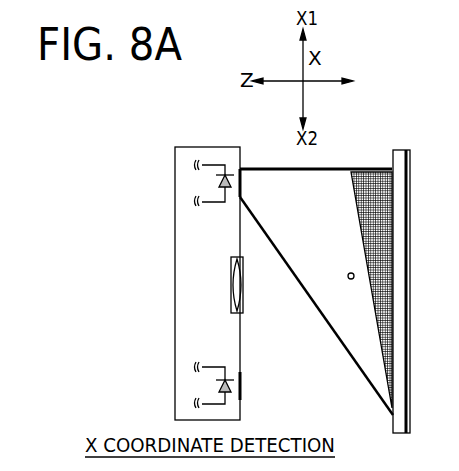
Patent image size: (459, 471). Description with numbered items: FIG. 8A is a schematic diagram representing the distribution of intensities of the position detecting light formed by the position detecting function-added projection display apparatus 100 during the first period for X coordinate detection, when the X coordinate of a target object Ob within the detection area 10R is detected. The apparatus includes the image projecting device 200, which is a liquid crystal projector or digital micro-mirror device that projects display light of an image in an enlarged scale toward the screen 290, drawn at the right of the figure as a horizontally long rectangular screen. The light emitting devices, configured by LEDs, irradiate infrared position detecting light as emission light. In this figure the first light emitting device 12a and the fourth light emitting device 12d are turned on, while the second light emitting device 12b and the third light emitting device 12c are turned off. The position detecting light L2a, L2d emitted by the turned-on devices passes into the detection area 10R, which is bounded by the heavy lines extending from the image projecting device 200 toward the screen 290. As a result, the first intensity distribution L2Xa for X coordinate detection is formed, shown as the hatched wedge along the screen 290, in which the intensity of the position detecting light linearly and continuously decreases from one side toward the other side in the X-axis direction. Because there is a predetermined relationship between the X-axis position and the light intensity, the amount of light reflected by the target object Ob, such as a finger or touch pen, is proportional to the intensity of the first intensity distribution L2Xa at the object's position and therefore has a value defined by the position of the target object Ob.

The image projecting device 200 is at (200, 146).
The position detecting function-added projection display apparatus 100 is at (201, 258).
The first light emitting device 12a is at (159, 178).
The fourth light emitting device 12d is at (188, 181).
The second light emitting device 12b is at (162, 381).
The third light emitting device 12c is at (188, 383).
The position detecting light L2a is at (272, 313).
The position detecting light L2d is at (294, 275).
The detection area 10R is at (319, 241).
The first intensity distribution for X coordinate detection L2Xa is at (368, 171).
The screen 290 is at (398, 150).
The target object Ob is at (349, 279).